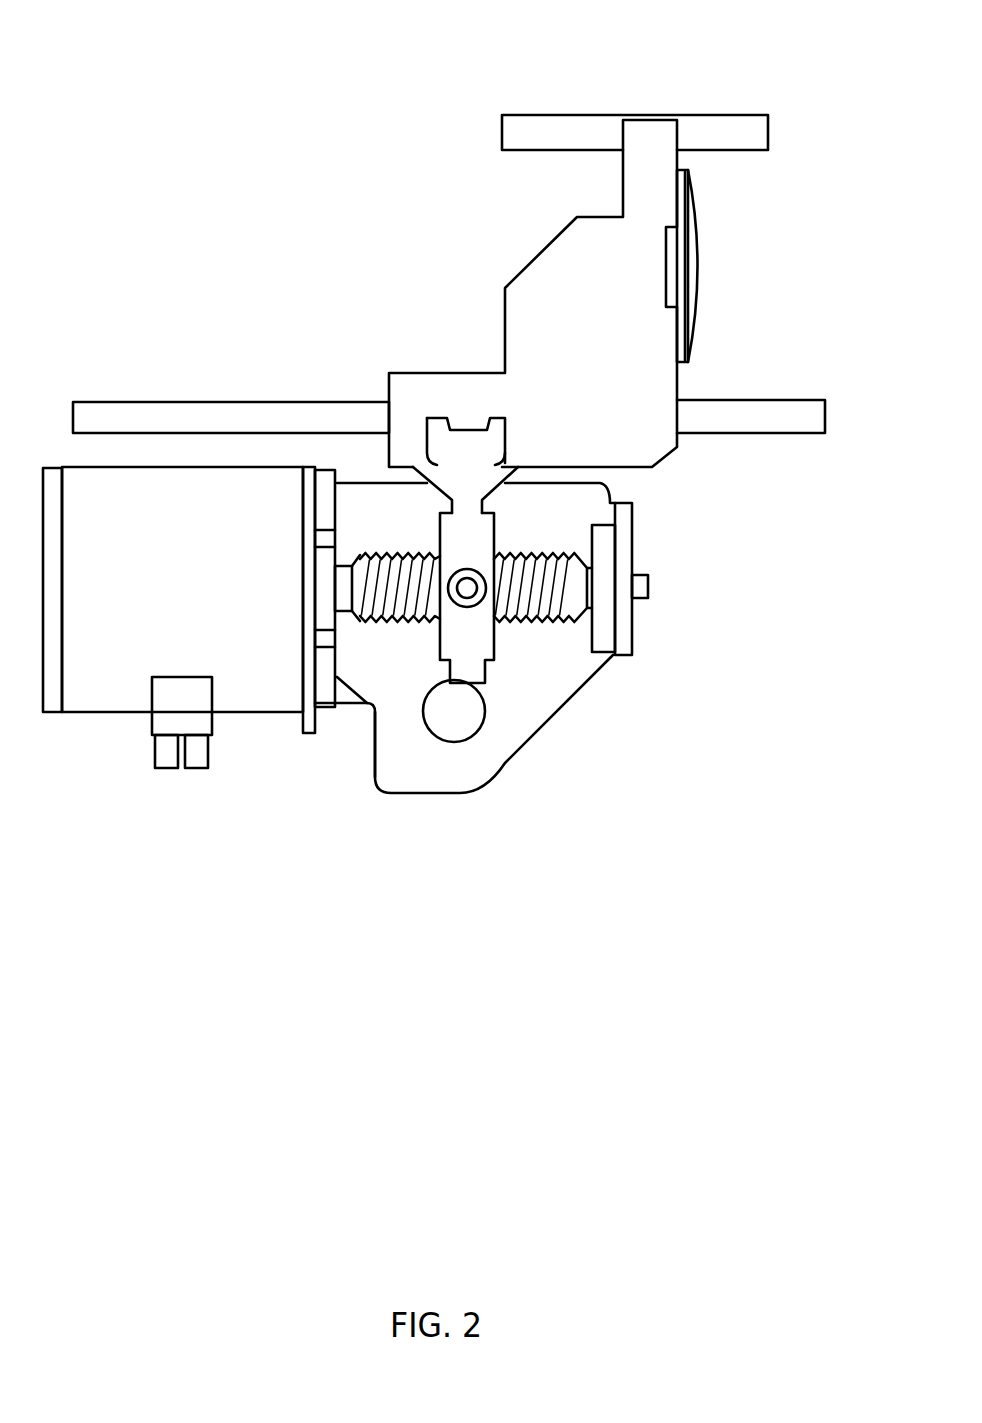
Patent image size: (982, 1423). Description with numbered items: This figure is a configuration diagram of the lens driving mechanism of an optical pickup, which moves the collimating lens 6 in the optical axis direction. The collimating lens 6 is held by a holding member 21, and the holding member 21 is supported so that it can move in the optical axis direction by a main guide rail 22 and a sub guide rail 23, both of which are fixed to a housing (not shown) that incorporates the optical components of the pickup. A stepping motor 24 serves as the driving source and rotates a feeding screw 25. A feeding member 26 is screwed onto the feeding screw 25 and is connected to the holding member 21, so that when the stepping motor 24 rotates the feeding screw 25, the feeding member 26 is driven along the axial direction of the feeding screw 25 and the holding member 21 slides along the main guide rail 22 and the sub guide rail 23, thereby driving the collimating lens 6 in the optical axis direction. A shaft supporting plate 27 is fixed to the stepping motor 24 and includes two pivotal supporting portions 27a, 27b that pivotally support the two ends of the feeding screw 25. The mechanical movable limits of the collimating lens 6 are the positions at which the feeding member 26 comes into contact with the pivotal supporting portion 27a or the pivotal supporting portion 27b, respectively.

The collimating lens 6 is at (700, 282).
The holding member 21 is at (520, 273).
The main guide rail 22 is at (757, 432).
The sub guide rail 23 is at (553, 115).
The stepping motor 24 is at (92, 705).
The feeding screw 25 is at (518, 632).
The feeding member 26 is at (440, 640).
The shaft supporting plate 27 is at (462, 712).
The pivotal supporting portion 27a is at (363, 717).
The pivotal supporting portion 27b is at (592, 633).